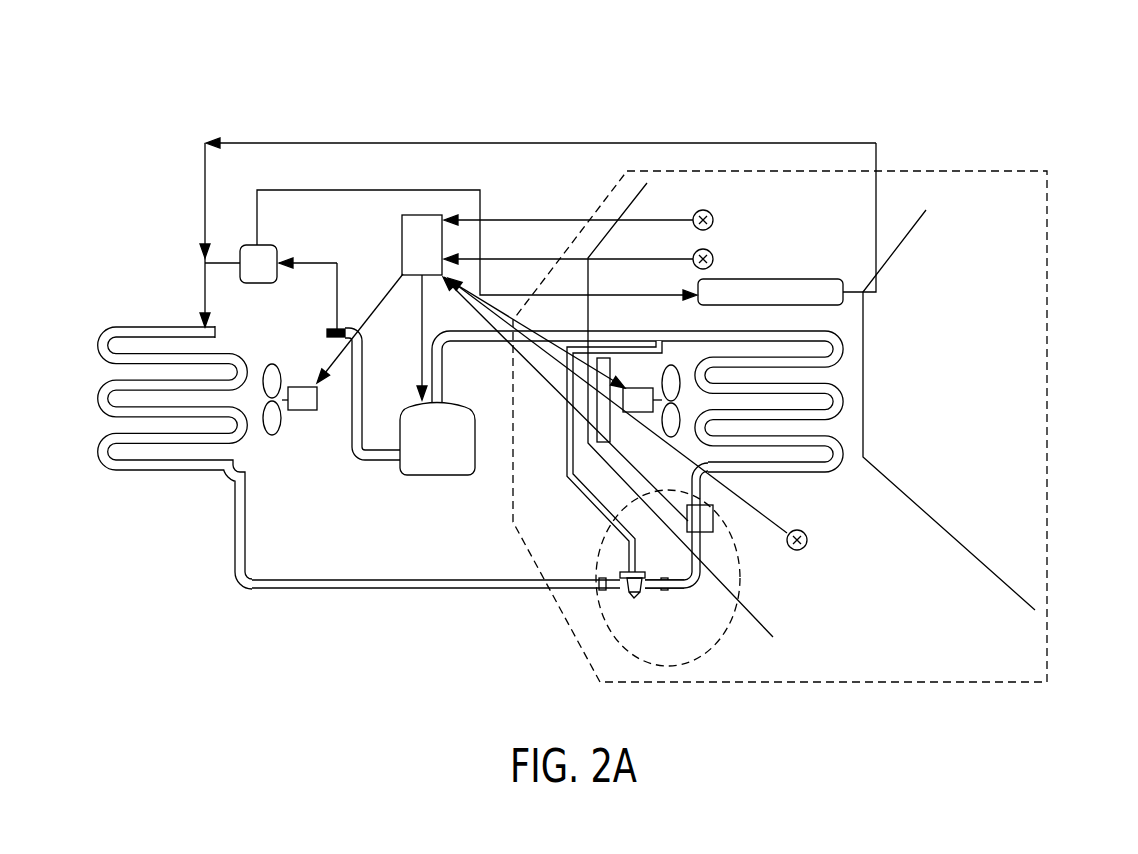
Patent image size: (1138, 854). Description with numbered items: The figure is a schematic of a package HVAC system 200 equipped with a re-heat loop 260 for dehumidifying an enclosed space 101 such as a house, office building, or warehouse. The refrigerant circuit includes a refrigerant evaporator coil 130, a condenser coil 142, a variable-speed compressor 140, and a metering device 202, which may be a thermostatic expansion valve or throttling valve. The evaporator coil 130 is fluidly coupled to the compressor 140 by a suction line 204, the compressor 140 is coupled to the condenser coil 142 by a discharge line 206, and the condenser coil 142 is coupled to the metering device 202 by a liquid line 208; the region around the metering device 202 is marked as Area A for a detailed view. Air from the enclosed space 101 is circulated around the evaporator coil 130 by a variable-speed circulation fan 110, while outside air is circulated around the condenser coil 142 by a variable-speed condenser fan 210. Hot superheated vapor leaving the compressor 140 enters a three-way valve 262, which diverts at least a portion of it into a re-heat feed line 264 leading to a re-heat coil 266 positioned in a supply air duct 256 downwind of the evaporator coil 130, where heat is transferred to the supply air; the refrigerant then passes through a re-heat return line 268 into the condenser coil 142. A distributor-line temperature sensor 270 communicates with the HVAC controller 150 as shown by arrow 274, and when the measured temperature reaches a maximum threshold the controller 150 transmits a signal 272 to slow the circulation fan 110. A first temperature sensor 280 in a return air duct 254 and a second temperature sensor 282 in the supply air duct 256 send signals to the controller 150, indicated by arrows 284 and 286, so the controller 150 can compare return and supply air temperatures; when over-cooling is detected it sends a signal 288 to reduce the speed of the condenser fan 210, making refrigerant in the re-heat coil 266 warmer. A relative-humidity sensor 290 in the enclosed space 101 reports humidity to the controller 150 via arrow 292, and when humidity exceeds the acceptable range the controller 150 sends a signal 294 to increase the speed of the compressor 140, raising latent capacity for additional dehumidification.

The enclosed space 101 is at (1048, 440).
The variable-speed circulation fan 110 is at (638, 388).
The refrigerant evaporator coil 130 is at (812, 477).
The variable-speed compressor 140 is at (433, 477).
The condenser coil 142 is at (160, 471).
The HVAC controller 150 is at (402, 220).
The package HVAC system 200 is at (154, 286).
The metering device 202 is at (634, 598).
The suction line 204 is at (467, 342).
The discharge line 206 is at (362, 333).
The liquid line 208 is at (362, 590).
The variable-speed condenser fan 210 is at (302, 411).
The return air duct 254 is at (741, 611).
The supply air duct 256 is at (892, 265).
The re-heat loop 260 is at (878, 160).
The three-way valve 262 is at (236, 245).
The re-heat feed line 264 is at (346, 190).
The re-heat coil 266 is at (844, 316).
The re-heat return line 268 is at (553, 143).
The distributor-line temperature sensor 270 is at (709, 533).
The signal 272 is at (612, 358).
The arrow 274 is at (657, 493).
The first temperature sensor 280 is at (796, 551).
The second temperature sensor 282 is at (714, 256).
The arrow 284 is at (763, 514).
The arrow 286 is at (633, 259).
The signal 288 is at (378, 306).
The relative-humidity sensor 290 is at (714, 216).
The arrow 292 is at (519, 220).
The signal 294 is at (419, 363).
The Area A is at (668, 578).